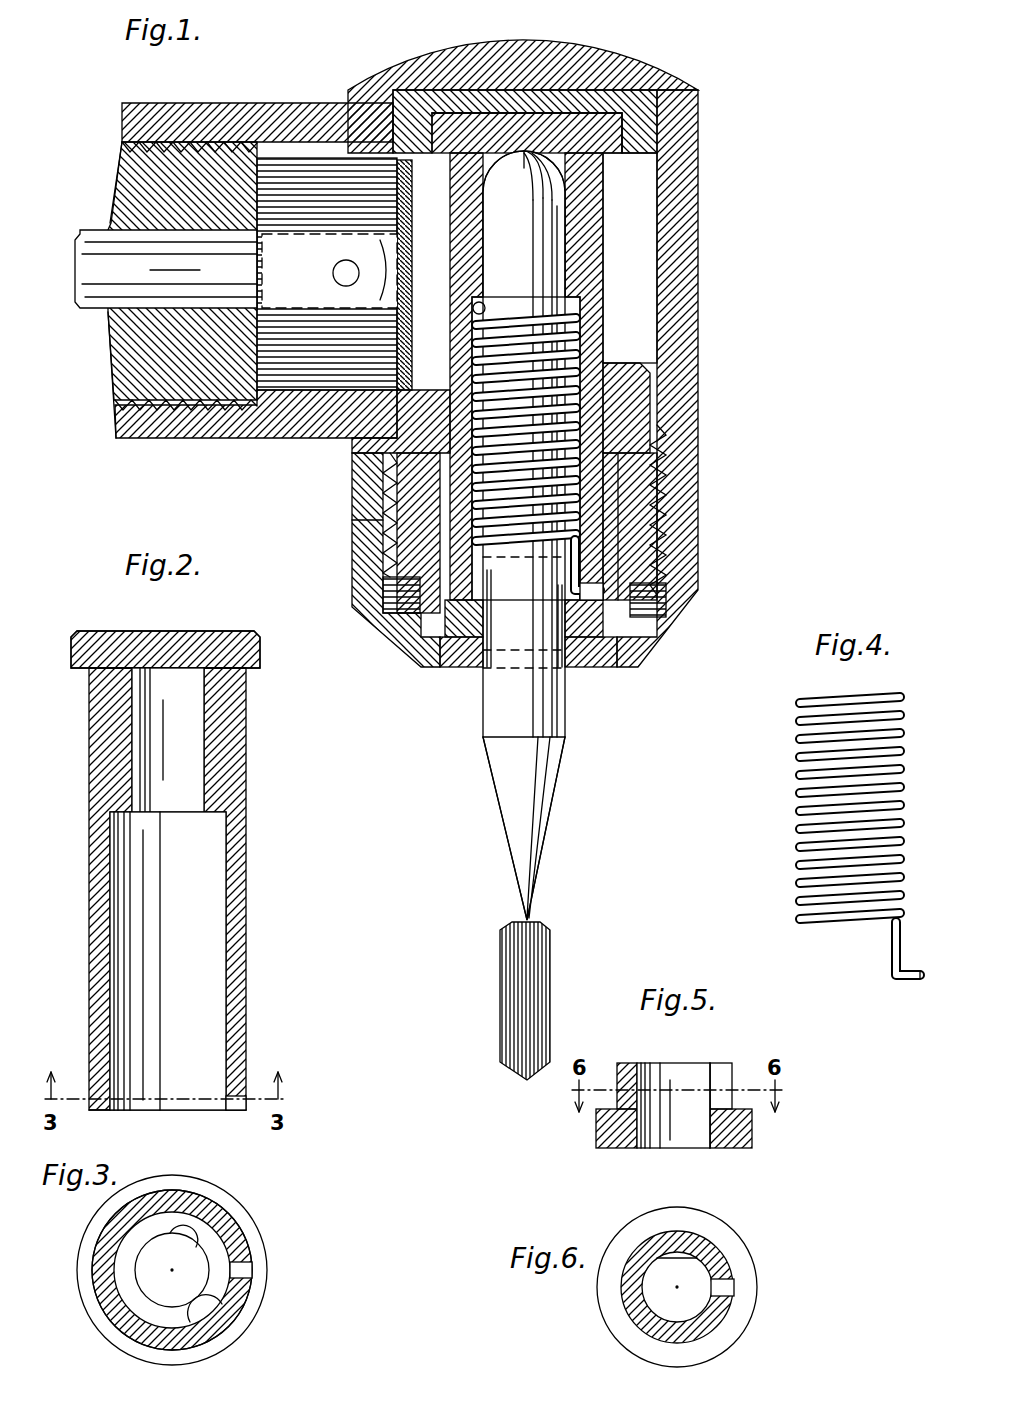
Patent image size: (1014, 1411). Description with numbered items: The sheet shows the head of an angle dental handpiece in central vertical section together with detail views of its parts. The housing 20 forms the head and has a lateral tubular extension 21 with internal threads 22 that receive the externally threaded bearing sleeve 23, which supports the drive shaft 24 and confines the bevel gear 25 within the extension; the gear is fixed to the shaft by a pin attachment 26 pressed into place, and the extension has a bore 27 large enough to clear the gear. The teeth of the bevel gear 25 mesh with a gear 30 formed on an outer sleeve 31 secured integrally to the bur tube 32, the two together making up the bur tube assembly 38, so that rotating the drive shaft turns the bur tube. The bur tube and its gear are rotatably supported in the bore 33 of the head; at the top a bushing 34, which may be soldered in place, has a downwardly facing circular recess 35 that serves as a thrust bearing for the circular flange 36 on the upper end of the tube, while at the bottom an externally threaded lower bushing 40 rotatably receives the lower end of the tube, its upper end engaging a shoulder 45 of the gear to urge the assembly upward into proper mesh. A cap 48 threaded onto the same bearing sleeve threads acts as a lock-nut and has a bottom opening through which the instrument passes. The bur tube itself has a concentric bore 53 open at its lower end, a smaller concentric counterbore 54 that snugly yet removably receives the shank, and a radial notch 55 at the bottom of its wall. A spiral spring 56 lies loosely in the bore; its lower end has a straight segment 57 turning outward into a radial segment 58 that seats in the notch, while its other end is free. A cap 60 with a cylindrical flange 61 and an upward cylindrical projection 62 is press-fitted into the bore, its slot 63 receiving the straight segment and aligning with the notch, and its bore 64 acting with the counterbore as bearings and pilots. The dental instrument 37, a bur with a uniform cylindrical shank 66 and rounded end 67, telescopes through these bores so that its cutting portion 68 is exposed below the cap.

In FIG. 1, the housing 20 is at (666, 60).
In FIG. 1, the lateral tubular extension 21 is at (136, 106).
In FIG. 1, the internal threads 22 is at (205, 148).
In FIG. 1, the bearing sleeve 23 is at (132, 187).
In FIG. 1, the drive shaft 24 is at (105, 295).
In FIG. 1, the bevel gear 25 is at (405, 195).
In FIG. 1, the pin attachment 26 is at (344, 262).
In FIG. 1, the bore 27 is at (298, 388).
In FIG. 1, the gear 30 is at (690, 372).
In FIG. 1, the outer sleeve 31 is at (666, 487).
In FIG. 1, the bur tube 32 is at (595, 330).
In FIG. 2, the bur tube 32 is at (262, 906).
In FIG. 3, the bur tube 32 is at (272, 1222).
In FIG. 1, the bore 33 is at (645, 232).
In FIG. 1, the bushing 34 is at (648, 107).
In FIG. 1, the circular recess 35 is at (632, 124).
In FIG. 1, the circular flange 36 is at (612, 130).
In FIG. 2, the circular flange 36 is at (232, 640).
In FIG. 3, the circular flange 36 is at (238, 1207).
In FIG. 1, the dental instrument 37 is at (558, 780).
In FIG. 1, the bur tube assembly 38 is at (600, 427).
In FIG. 1, the lower bushing 40 is at (655, 552).
In FIG. 1, the shoulder 45 is at (622, 460).
In FIG. 1, the cap 48 is at (666, 598).
In FIG. 1, the bore 53 is at (582, 300).
In FIG. 2, the bore 53 is at (210, 925).
In FIG. 3, the bore 53 is at (244, 1300).
In FIG. 1, the counterbore 54 is at (555, 157).
In FIG. 2, the counterbore 54 is at (178, 725).
In FIG. 3, the counterbore 54 is at (178, 1235).
In FIG. 1, the radial notch 55 is at (590, 615).
In FIG. 2, the radial notch 55 is at (232, 1105).
In FIG. 3, the radial notch 55 is at (243, 1265).
In FIG. 1, the spiral spring 56 is at (578, 410).
In FIG. 4, the spiral spring 56 is at (785, 802).
In FIG. 1, the straight segment 57 is at (580, 562).
In FIG. 4, the straight segment 57 is at (889, 940).
In FIG. 1, the radial segment 58 is at (600, 588).
In FIG. 4, the radial segment 58 is at (906, 982).
In FIG. 1, the cap 60 is at (461, 636).
In FIG. 5, the cap 60 is at (689, 1105).
In FIG. 6, the cap 60 is at (673, 1287).
In FIG. 1, the cylindrical flange 61 is at (447, 645).
In FIG. 5, the cylindrical flange 61 is at (752, 1135).
In FIG. 6, the cylindrical flange 61 is at (708, 1342).
In FIG. 1, the cylindrical projection 62 is at (478, 570).
In FIG. 5, the cylindrical projection 62 is at (632, 1080).
In FIG. 6, the cylindrical projection 62 is at (722, 1310).
In FIG. 1, the slot 63 is at (564, 600).
In FIG. 5, the slot 63 is at (722, 1078).
In FIG. 6, the slot 63 is at (724, 1284).
In FIG. 1, the bore 64 is at (488, 596).
In FIG. 5, the bore 64 is at (665, 1075).
In FIG. 6, the bore 64 is at (690, 1262).
In FIG. 1, the shank 66 is at (556, 205).
In FIG. 1, the rounded end 67 is at (524, 150).
In FIG. 1, the cutting portion 68 is at (513, 985).